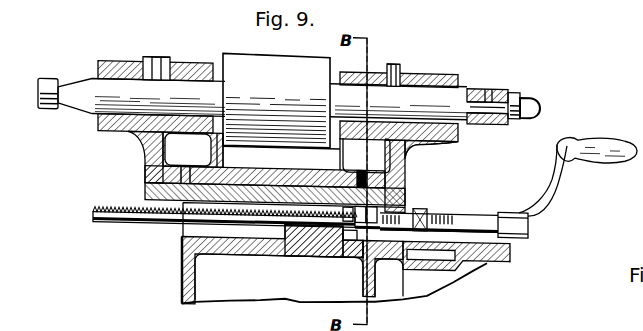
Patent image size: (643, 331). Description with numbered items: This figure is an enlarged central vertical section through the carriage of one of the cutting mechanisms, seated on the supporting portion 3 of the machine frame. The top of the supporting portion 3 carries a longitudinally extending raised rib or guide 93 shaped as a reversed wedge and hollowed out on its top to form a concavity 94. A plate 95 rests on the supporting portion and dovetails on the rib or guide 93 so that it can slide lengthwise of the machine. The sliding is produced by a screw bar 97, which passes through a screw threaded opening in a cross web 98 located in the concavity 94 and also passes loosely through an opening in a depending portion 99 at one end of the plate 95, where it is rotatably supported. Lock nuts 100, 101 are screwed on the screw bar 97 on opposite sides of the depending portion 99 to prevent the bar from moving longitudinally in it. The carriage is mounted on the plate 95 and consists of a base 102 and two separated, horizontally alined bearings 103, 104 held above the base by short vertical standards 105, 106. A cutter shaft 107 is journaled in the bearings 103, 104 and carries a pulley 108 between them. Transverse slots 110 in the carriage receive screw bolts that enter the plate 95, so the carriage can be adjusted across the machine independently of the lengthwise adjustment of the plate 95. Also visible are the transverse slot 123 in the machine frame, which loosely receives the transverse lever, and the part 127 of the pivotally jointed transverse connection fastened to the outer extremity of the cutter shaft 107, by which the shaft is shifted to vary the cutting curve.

The supporting portion 3 is at (334, 257).
The raised rib or guide 93 is at (487, 210).
The concavity 94 is at (455, 226).
The plate 95 is at (145, 190).
The screw bar 97 is at (152, 226).
The cross web 98 is at (297, 232).
The depending portion 99 is at (405, 197).
The lock nut 100 is at (342, 250).
The lock nut 101 is at (424, 211).
The carriage base 102 is at (168, 125).
The bearing 103 is at (133, 72).
The bearing 104 is at (442, 70).
The vertical standard 105 is at (164, 151).
The vertical standard 106 is at (412, 146).
The cutter shaft 107 is at (398, 102).
The pulley 108 is at (276, 100).
The transverse slot 110 is at (208, 160).
The transverse slot 123 is at (466, 259).
The part of transverse connection 127 is at (498, 88).